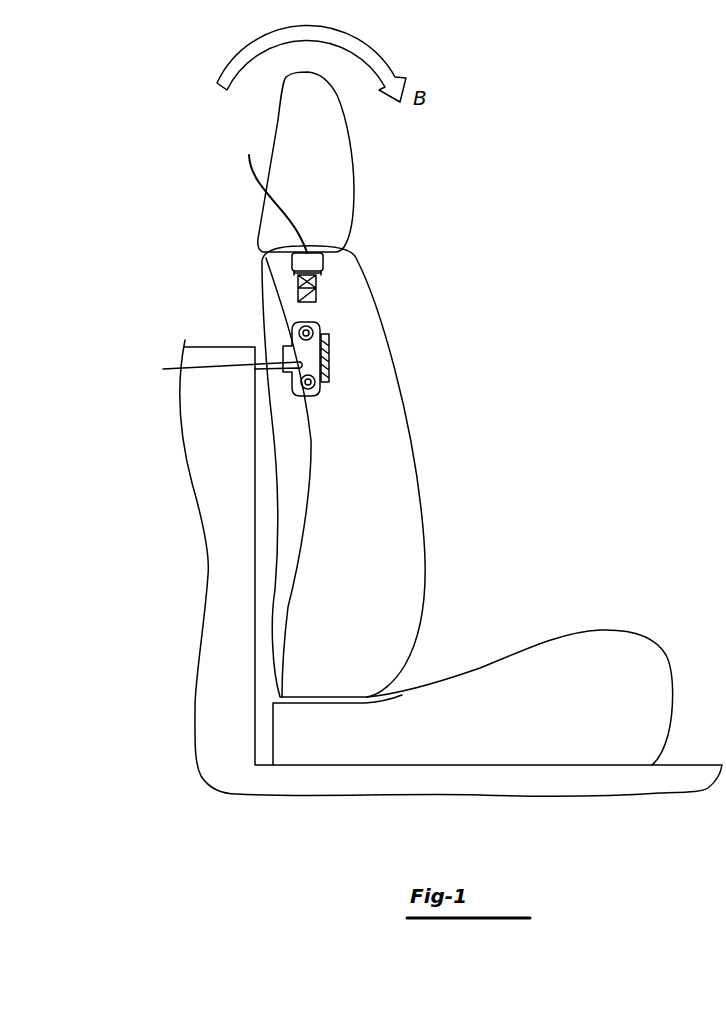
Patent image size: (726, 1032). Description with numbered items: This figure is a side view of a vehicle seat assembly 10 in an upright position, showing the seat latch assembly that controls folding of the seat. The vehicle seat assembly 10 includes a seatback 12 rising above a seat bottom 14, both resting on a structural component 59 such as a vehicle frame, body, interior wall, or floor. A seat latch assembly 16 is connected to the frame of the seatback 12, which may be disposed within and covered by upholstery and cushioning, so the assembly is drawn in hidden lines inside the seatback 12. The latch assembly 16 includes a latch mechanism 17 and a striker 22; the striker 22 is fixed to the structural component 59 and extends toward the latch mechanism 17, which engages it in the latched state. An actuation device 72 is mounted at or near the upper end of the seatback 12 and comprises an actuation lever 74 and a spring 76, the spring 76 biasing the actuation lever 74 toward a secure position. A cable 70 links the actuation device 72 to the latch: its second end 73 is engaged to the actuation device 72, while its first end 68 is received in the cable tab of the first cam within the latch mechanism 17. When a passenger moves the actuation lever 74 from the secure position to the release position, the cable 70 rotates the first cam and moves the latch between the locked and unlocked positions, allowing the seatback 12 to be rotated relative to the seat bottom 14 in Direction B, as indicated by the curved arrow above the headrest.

The vehicle seat assembly 10 is at (452, 238).
The seatback 12 is at (400, 503).
The seat bottom 14 is at (607, 653).
The seat latch assembly 16 is at (348, 357).
The latch mechanism 17 is at (273, 401).
The striker 22 is at (219, 371).
The structural component 59 is at (209, 482).
The first end of cable 68 is at (333, 344).
The cable 70 is at (300, 316).
The actuation device 72 is at (312, 247).
The second end of cable 73 is at (326, 299).
The actuation lever 74 is at (273, 192).
The spring 76 is at (295, 277).